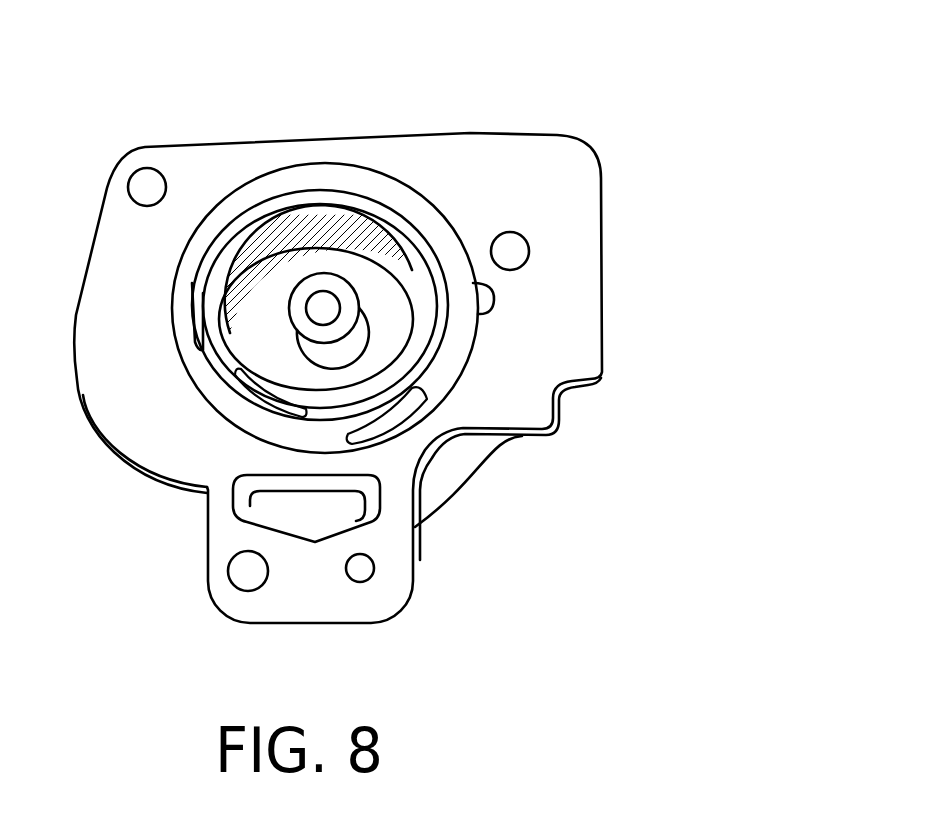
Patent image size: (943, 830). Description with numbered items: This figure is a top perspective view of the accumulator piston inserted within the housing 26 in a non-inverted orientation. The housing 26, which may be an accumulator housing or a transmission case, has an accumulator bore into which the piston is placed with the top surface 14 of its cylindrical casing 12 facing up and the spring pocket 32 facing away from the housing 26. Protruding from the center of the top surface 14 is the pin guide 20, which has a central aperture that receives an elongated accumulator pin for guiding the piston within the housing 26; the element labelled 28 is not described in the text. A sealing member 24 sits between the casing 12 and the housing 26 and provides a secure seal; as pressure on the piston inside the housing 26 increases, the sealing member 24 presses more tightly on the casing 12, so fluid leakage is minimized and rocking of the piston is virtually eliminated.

The cylindrical casing 12 is at (358, 432).
The top surface 14 is at (268, 335).
The pin guide 20 is at (362, 337).
The sealing member 24 is at (300, 242).
The housing 26 is at (132, 320).
The shaft 28 is at (323, 308).
The spring pocket 32 is at (318, 182).